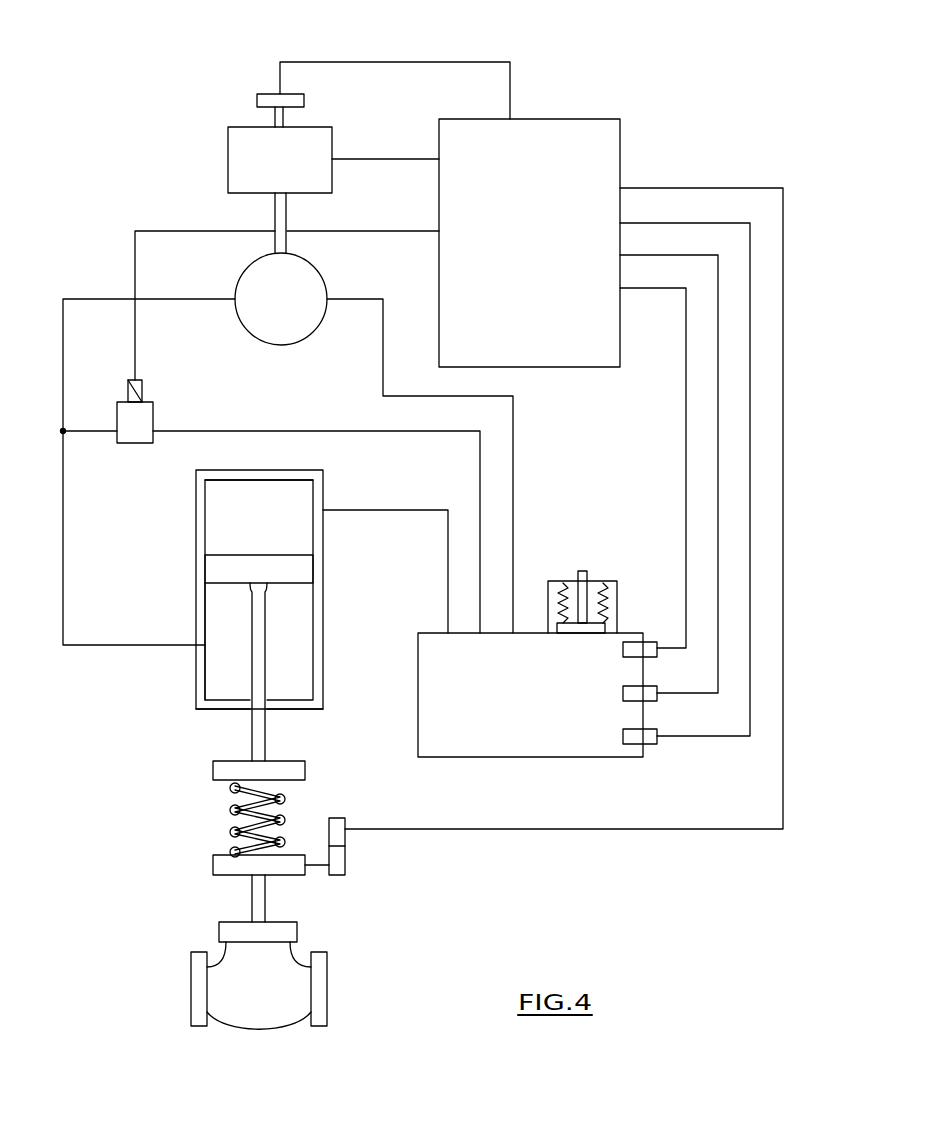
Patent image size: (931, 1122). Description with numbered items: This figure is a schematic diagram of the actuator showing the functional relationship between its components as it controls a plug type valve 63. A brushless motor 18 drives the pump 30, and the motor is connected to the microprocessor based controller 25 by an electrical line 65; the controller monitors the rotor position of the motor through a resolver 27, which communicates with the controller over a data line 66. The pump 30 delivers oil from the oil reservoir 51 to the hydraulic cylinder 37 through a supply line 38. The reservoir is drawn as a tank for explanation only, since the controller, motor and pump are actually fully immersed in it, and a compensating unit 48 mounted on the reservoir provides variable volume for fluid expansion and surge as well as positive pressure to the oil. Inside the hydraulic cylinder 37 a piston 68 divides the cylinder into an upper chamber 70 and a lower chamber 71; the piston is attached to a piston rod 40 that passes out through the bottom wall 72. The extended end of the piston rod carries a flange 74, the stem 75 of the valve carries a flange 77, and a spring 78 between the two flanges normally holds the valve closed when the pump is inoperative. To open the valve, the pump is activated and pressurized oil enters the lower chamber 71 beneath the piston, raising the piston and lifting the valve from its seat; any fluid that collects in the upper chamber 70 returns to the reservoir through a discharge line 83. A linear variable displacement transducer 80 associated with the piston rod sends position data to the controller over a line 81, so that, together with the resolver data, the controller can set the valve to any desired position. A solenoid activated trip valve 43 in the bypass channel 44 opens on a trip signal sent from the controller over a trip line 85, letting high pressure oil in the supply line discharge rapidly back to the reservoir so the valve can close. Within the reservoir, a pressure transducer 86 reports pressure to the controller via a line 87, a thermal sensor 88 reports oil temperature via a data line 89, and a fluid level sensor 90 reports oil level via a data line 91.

The brushless motor 18 is at (224, 157).
The resolver 27 is at (258, 100).
The data line 66 is at (416, 62).
The electrical line 65 is at (365, 159).
The trip line 85 is at (328, 231).
The controller 25 is at (634, 143).
The pump 30 is at (240, 326).
The supply line 38 is at (63, 583).
The solenoid activated trip valve 43 is at (155, 415).
The bypass channel 44 is at (258, 431).
The hydraulic cylinder 37 is at (194, 684).
The upper chamber 70 is at (282, 503).
The piston 68 is at (303, 568).
The lower chamber 71 is at (220, 613).
The bottom wall 72 is at (200, 709).
The piston rod 40 is at (250, 725).
The discharge line 83 is at (375, 508).
The flange 74 is at (213, 770).
The spring 78 is at (228, 820).
The flange 77 is at (213, 862).
The stem 75 is at (265, 902).
The linear variable displacement transducer 80 is at (345, 858).
The line 81 is at (562, 830).
The plug type valve 63 is at (338, 985).
The oil reservoir 51 is at (530, 695).
The compensating unit 48 is at (605, 577).
The fluid level sensor 90 is at (657, 655).
The data line 91 is at (686, 420).
The thermal sensor 88 is at (657, 698).
The data line 89 is at (718, 362).
The pressure transducer 86 is at (648, 744).
The line 87 is at (783, 420).